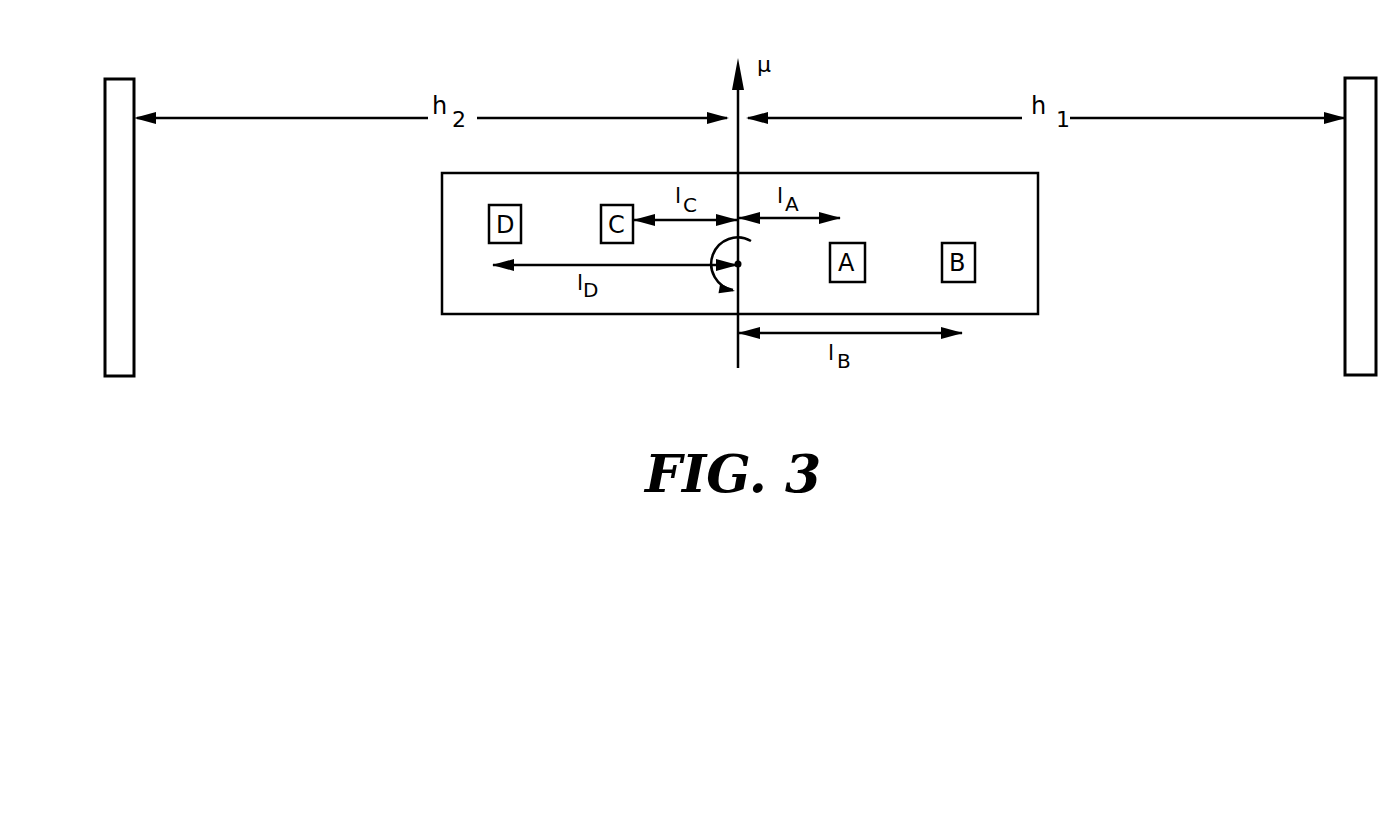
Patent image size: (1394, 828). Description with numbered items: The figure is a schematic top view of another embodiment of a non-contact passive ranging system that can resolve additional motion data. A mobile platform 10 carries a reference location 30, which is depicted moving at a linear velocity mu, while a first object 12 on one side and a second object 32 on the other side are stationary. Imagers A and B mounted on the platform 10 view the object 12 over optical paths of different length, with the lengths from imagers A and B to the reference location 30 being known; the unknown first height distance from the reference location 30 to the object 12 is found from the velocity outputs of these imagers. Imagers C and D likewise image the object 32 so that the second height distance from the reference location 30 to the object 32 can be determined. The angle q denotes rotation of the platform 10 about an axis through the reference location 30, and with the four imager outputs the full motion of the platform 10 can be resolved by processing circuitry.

The platform 10 is at (1008, 203).
The object 12 is at (1357, 312).
The reference location 30 is at (745, 272).
The object 32 is at (124, 324).